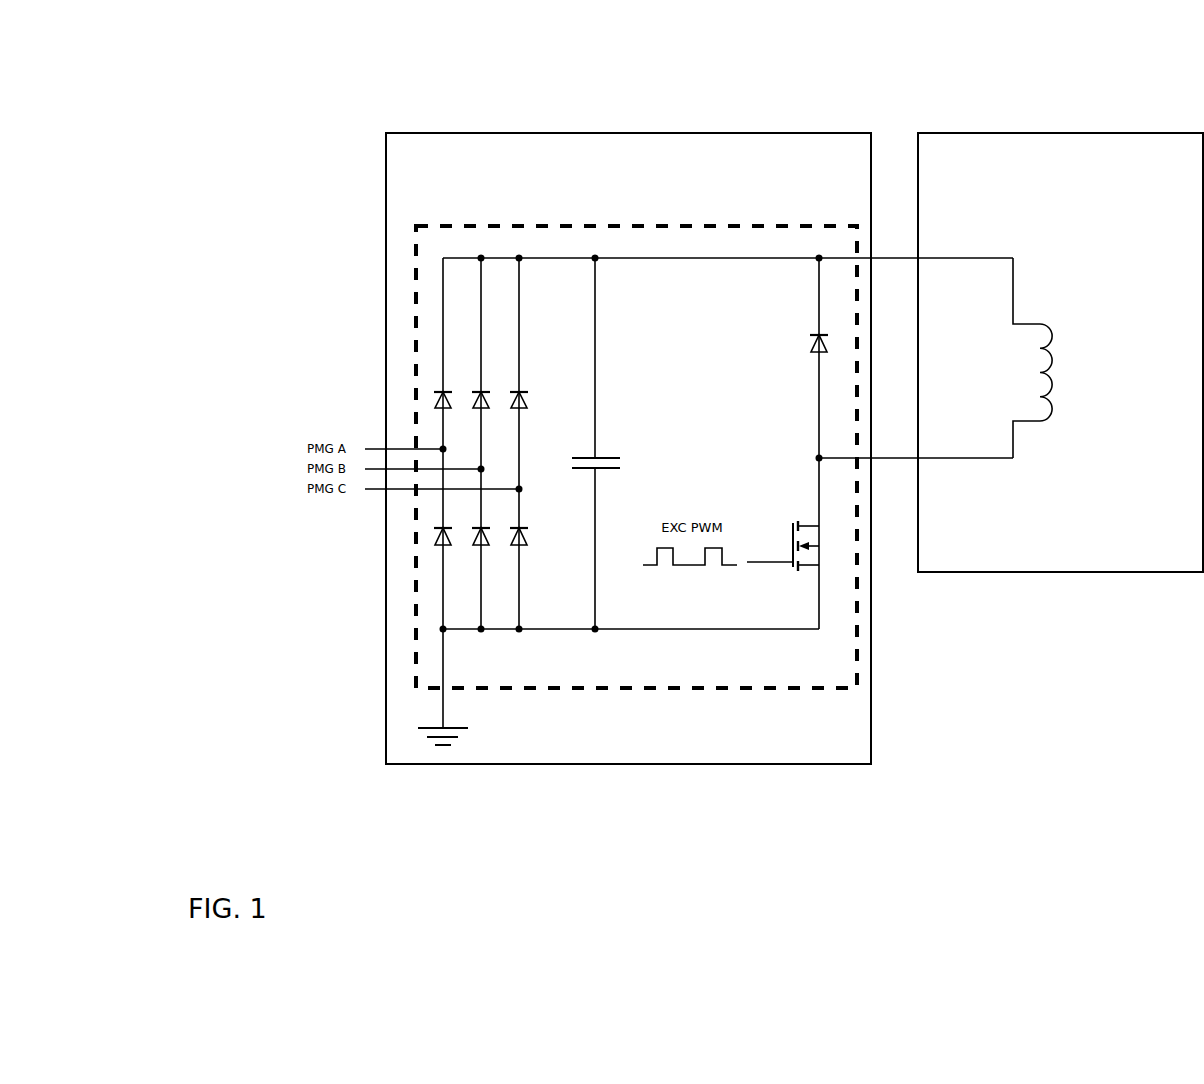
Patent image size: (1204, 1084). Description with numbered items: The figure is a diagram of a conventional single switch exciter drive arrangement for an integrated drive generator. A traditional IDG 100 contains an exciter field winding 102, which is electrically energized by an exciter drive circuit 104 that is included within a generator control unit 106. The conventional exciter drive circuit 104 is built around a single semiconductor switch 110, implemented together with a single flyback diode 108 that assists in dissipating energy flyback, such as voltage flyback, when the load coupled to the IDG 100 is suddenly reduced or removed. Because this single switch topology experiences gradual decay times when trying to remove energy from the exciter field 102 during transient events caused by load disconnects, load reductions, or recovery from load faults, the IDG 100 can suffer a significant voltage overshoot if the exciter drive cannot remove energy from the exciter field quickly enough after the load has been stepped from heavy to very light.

The IDG 100 is at (986, 130).
The exciter field winding 102 is at (1042, 321).
The exciter drive circuit 104 is at (718, 690).
The generator control unit 106 is at (448, 130).
The flyback diode 108 is at (815, 341).
The semiconductor switch 110 is at (792, 518).